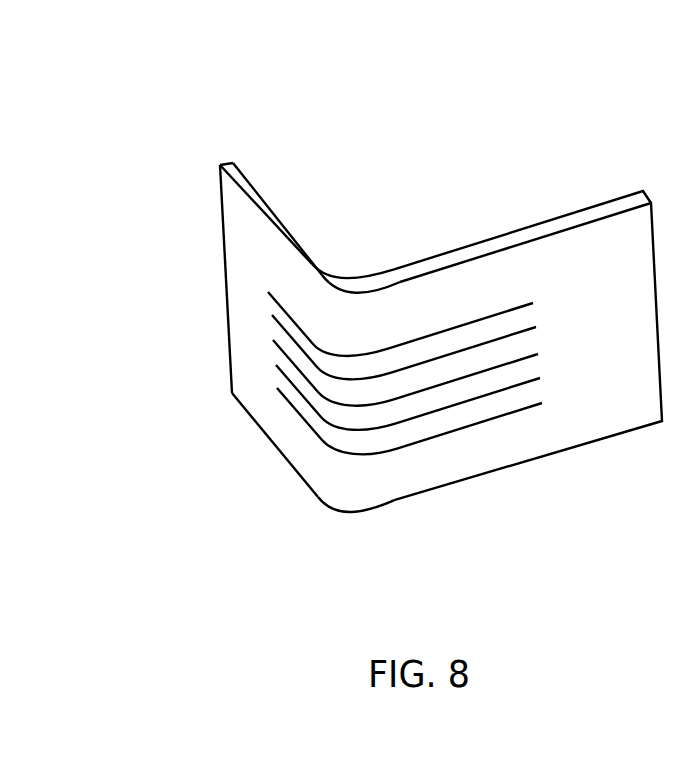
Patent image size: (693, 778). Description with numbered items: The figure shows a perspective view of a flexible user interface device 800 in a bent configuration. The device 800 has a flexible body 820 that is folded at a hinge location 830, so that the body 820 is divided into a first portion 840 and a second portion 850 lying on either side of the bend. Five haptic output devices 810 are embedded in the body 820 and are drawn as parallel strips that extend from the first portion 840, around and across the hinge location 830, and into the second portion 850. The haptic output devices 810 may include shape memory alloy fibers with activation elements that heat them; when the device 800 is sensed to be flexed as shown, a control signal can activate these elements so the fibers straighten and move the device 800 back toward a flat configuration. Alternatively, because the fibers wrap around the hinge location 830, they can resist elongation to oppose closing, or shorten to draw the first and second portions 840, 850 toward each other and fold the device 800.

The flexible user interface device 800 is at (363, 289).
The haptic output devices 810 is at (277, 388).
The flexible body 820 is at (425, 358).
The hinge location 830 is at (348, 264).
The first portion 840 is at (265, 443).
The second portion 850 is at (580, 463).